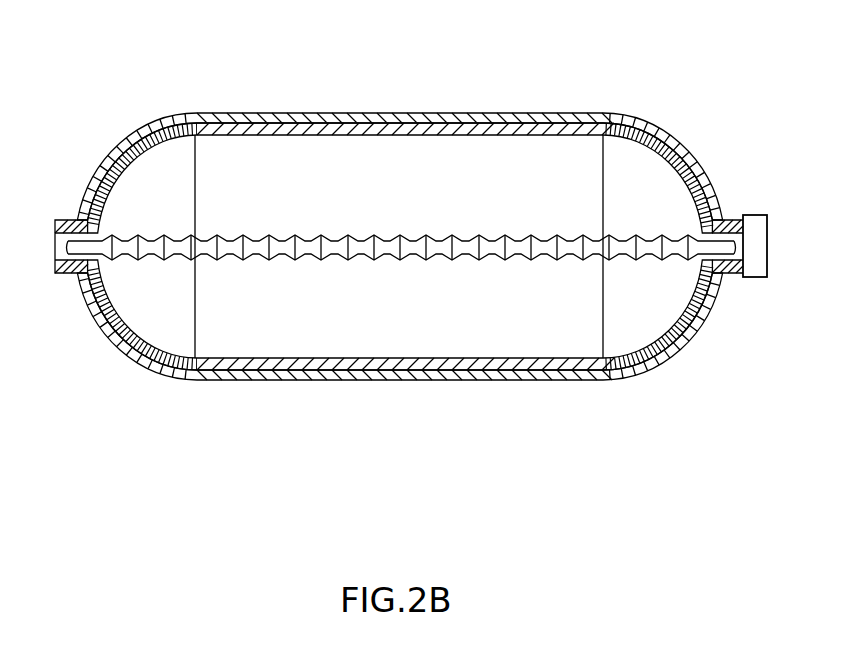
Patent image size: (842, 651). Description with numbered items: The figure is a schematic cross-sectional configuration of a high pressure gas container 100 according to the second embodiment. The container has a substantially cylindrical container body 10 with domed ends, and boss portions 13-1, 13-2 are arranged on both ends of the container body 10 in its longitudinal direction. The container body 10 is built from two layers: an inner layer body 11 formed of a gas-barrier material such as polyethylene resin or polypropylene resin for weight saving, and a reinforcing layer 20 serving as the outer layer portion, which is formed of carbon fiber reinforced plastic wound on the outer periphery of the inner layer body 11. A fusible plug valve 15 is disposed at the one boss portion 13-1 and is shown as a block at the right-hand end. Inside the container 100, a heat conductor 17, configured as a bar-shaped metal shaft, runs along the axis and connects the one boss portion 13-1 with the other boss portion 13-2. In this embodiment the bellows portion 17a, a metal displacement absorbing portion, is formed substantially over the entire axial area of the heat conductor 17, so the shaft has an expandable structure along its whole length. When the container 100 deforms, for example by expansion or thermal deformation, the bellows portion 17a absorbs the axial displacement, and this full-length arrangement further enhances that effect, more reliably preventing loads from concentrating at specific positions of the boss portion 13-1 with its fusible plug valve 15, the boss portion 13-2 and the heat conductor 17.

The high pressure gas container 100 is at (668, 102).
The container body 10 is at (382, 52).
The reinforcing layer 20 is at (323, 118).
The inner layer body 11 is at (368, 127).
The heat conductor 17 is at (79, 240).
The bellows portion 17a is at (398, 248).
The boss portion 13-2 is at (57, 274).
The boss portion 13-1 is at (733, 273).
The fusible plug valve 15 is at (755, 262).